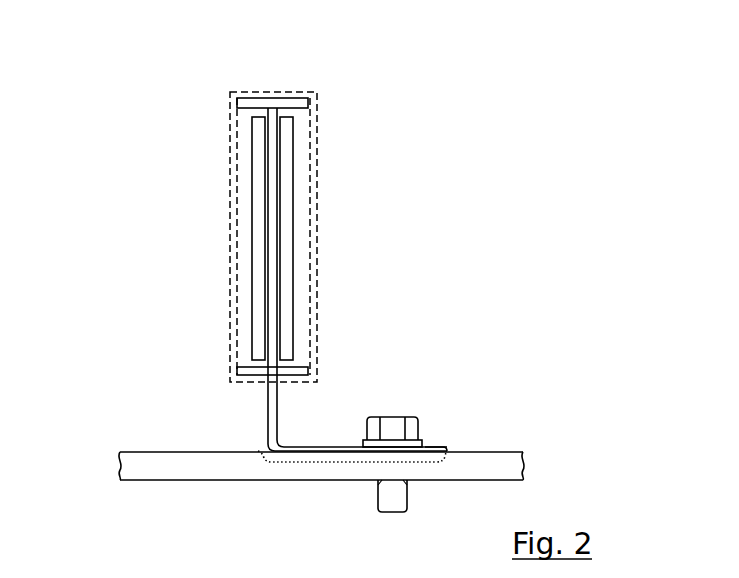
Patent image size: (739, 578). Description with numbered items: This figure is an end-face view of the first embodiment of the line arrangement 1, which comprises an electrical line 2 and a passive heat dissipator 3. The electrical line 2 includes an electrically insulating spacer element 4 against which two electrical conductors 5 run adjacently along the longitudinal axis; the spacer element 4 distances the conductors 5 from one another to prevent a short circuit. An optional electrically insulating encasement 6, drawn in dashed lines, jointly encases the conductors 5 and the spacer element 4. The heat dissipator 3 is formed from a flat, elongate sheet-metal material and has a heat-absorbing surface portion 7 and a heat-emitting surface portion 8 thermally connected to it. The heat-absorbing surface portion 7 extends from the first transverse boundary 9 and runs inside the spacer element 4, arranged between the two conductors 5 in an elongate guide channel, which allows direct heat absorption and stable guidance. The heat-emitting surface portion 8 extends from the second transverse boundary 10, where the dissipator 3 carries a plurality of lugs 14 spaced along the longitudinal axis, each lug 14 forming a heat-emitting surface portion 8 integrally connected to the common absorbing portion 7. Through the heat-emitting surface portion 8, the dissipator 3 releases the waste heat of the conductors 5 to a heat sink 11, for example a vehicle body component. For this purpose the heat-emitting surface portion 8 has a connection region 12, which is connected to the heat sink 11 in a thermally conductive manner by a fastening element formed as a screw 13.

The line arrangement 1 is at (86, 164).
The electrical line 2 is at (316, 163).
The passive heat dissipator 3 is at (277, 433).
The electrically insulating spacer element 4 is at (266, 108).
The electrical conductors 5 is at (257, 223).
The electrically insulating encasement 6 is at (230, 102).
The heat-absorbing surface portion 7 is at (251, 117).
The heat-emitting surface portion 8 is at (263, 462).
The first transverse boundary 9 is at (270, 108).
The second transverse boundary 10 is at (441, 440).
The heat sink 11 is at (168, 474).
The connection region 12 is at (427, 439).
The screw 13 is at (393, 420).
The lugs 14 is at (329, 444).